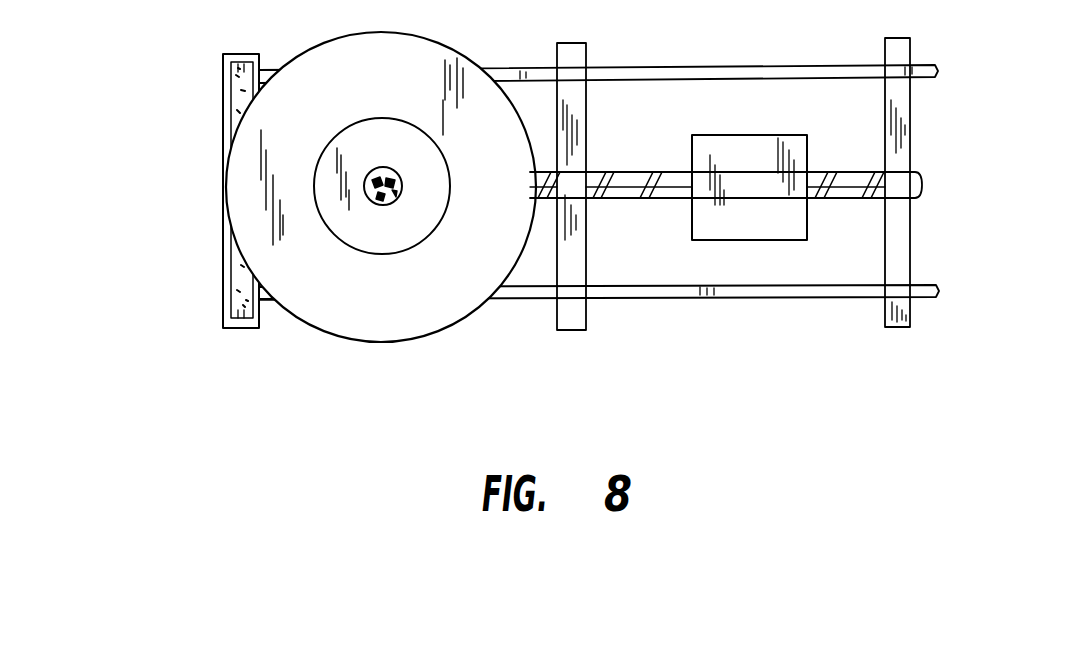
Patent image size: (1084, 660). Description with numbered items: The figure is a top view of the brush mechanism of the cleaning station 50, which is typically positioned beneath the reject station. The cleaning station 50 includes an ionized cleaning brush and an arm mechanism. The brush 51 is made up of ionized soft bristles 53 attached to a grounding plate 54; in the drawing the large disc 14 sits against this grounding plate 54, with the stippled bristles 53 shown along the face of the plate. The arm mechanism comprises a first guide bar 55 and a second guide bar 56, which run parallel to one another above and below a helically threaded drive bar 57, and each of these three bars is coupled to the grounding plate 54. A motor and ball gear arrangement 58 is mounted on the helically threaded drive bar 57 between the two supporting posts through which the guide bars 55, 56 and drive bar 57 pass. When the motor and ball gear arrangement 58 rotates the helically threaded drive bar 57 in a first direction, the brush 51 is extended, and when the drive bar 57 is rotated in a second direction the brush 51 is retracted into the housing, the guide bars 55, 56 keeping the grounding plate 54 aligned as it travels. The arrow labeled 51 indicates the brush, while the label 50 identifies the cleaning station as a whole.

The disc 14 is at (353, 97).
The cleaning station 50 is at (692, 328).
The brush 51 is at (145, 91).
The ionized soft bristles 53 is at (243, 83).
The grounding plate 54 is at (222, 54).
The first guide bar 55 is at (737, 70).
The second guide bar 56 is at (763, 297).
The helically threaded drive bar 57 is at (657, 172).
The motor and ball gear arrangement 58 is at (793, 135).